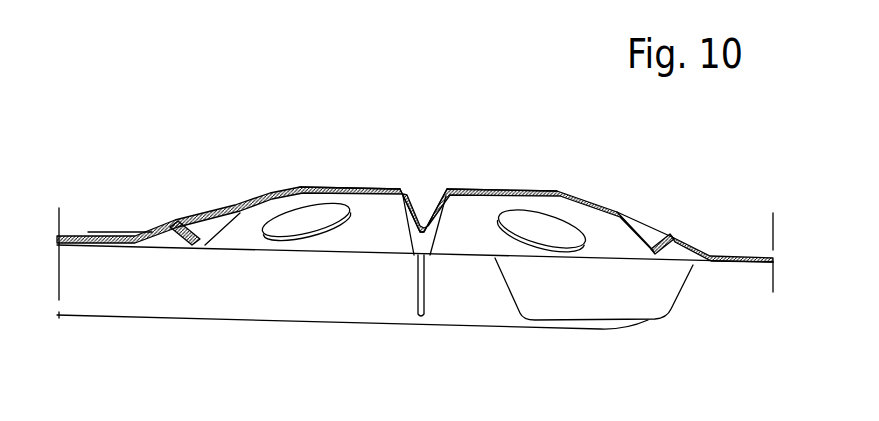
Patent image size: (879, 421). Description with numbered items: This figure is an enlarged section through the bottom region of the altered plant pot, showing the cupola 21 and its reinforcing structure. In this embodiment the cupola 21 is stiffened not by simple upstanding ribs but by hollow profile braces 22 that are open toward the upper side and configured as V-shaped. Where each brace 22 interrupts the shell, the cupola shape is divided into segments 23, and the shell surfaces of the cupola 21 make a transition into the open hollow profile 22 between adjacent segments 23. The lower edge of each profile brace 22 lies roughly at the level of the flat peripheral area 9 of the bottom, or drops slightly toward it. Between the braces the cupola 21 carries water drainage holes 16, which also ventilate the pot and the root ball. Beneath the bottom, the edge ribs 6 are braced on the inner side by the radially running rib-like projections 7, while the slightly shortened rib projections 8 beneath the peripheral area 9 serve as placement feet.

The edge ribs 6 is at (190, 303).
The rib-like projections 7 is at (418, 277).
The rib projections 8 is at (594, 289).
The peripheral area 9 is at (744, 292).
The water drainage holes 16 is at (314, 224).
The cupola 21 is at (265, 152).
The profile braces 22 is at (205, 224).
The segments 23 is at (362, 210).